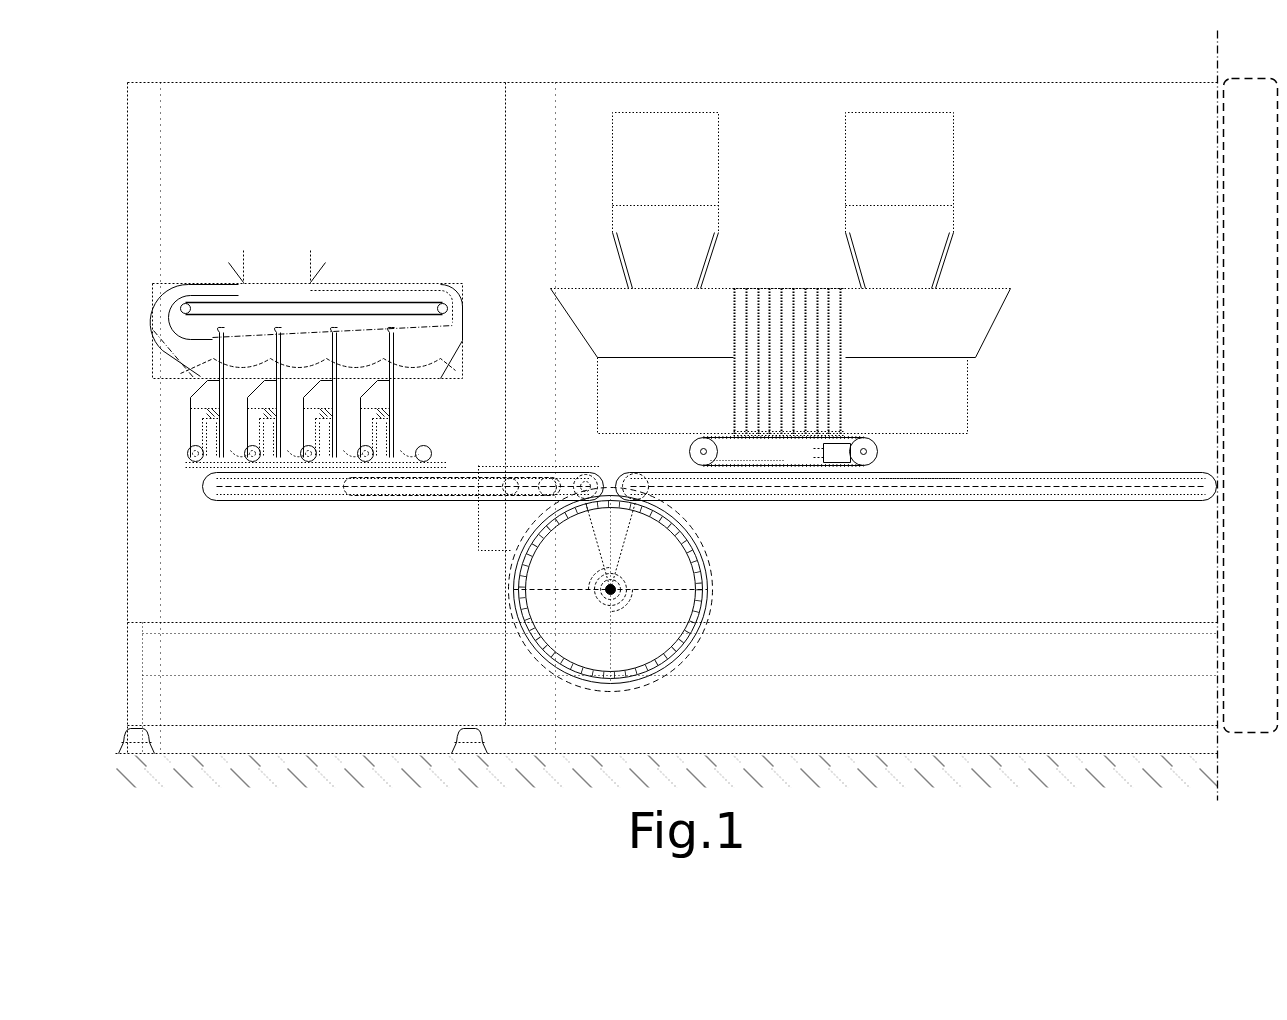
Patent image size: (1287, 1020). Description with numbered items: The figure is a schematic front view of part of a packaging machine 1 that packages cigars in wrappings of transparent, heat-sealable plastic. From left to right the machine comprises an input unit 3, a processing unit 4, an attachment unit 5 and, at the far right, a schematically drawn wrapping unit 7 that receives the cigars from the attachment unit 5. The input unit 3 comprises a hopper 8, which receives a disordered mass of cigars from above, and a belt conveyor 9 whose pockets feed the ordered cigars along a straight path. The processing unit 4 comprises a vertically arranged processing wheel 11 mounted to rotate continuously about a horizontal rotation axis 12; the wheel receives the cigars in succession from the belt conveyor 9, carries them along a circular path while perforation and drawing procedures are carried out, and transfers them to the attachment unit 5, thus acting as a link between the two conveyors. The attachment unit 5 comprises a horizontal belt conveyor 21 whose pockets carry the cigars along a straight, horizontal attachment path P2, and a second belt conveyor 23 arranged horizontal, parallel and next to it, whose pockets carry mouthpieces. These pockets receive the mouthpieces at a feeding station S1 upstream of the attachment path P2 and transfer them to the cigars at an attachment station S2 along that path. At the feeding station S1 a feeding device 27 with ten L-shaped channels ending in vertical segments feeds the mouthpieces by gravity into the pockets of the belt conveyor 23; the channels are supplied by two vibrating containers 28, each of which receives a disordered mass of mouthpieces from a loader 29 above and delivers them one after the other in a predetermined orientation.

The packaging machine 1 is at (272, 806).
The input unit 3 is at (274, 125).
The processing unit 4 is at (571, 700).
The attachment unit 5 is at (773, 125).
The wrapping unit 7 is at (1251, 406).
The hopper 8 is at (157, 394).
The belt conveyor 9 is at (302, 528).
The processing wheel 11 is at (545, 606).
The rotation axis 12 is at (615, 597).
The belt conveyor 21 is at (845, 525).
The belt conveyor 23 is at (905, 447).
The feeding device 27 is at (852, 388).
The vibrating container 28 is at (620, 330).
The loader 29 is at (655, 258).
The feeding station S1 is at (790, 418).
The attachment station S2 is at (760, 476).
The attachment path P2 is at (908, 475).